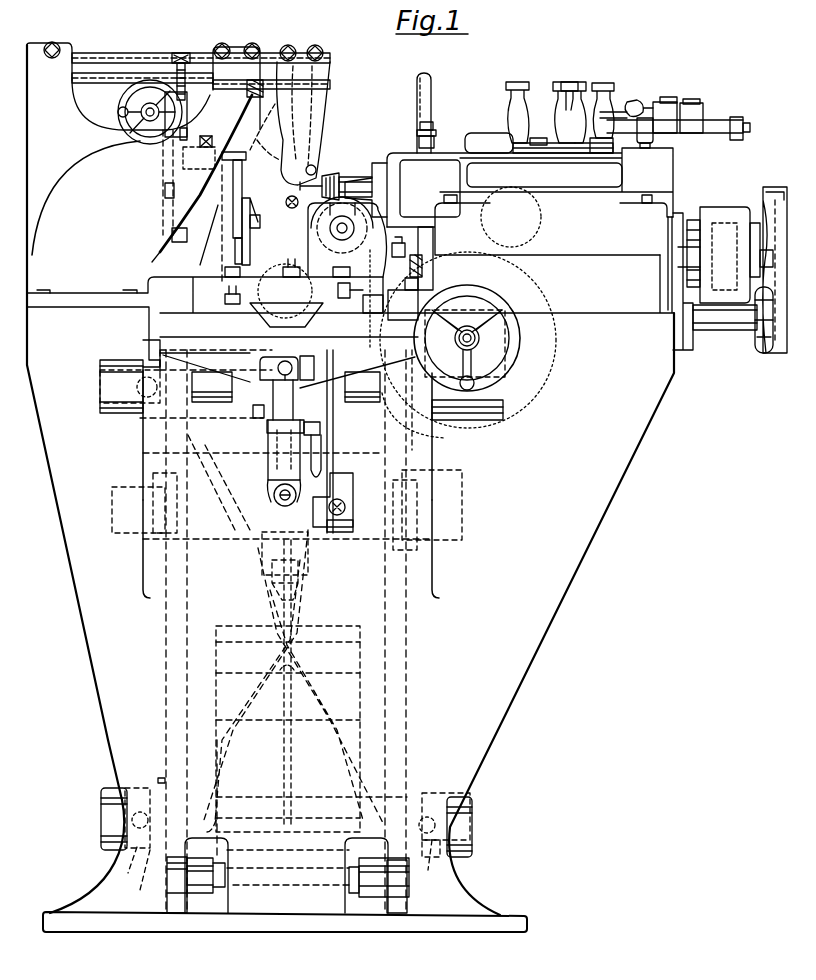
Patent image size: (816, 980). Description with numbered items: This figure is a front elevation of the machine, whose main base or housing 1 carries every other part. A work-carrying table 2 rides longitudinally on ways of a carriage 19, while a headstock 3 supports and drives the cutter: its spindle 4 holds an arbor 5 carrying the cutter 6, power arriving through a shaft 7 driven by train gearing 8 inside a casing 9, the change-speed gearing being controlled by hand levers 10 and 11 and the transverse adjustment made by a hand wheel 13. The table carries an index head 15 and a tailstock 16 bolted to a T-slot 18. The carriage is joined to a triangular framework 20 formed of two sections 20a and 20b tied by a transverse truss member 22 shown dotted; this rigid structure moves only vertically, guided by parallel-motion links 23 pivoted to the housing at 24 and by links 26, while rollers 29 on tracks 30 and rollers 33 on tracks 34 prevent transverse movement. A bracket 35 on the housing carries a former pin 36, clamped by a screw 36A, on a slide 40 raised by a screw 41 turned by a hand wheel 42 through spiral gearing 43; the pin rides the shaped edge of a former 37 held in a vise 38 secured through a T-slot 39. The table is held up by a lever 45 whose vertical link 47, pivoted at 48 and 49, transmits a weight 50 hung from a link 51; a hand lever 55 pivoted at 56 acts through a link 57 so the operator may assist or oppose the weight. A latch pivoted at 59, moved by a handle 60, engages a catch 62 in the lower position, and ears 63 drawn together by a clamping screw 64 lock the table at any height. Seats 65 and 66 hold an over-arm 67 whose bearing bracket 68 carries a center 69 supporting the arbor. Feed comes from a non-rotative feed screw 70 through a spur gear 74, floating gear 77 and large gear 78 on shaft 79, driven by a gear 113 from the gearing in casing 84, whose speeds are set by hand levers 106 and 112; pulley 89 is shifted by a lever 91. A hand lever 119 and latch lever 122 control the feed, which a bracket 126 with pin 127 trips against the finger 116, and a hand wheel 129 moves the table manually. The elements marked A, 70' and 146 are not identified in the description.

The main base or housing 1 is at (500, 690).
The work-carrying table 2 is at (390, 292).
The headstock 3 is at (530, 192).
The spindle 4 is at (378, 175).
The arbor 5 is at (356, 180).
The cutter 6 is at (332, 178).
The shaft 7 is at (682, 250).
The train gearing 8 is at (702, 330).
The box or casing 9 is at (730, 255).
The hand lever 10 is at (556, 108).
The hand lever 11 is at (584, 95).
The hand wheel 13 is at (758, 348).
The index head 15 is at (305, 222).
The tailstock 16 is at (318, 252).
The T-slot 18 is at (360, 301).
The carriage 19 is at (279, 376).
The framework 20 is at (408, 638).
The framework section 20a is at (176, 683).
The framework section 20b is at (395, 706).
The transverse truss member 22 is at (326, 560).
The horizontal link 23 is at (203, 877).
The pivot 24 is at (167, 875).
The horizontal link 26 is at (270, 376).
The roller 29 is at (278, 865).
The track 30 is at (158, 790).
The roller 33 is at (138, 405).
The track 34 is at (163, 417).
The bracket 35 is at (86, 198).
The former pin 36 is at (243, 138).
The screw 36A is at (263, 120).
The former 37 is at (243, 185).
The vise 38 is at (205, 253).
The T-slot 39 is at (225, 298).
The slide 40 is at (218, 208).
The screw 41 is at (163, 170).
The hand wheel 42 is at (145, 140).
The spiral gearing 43 is at (146, 76).
The lever 45 is at (173, 585).
The vertical link 47 is at (280, 450).
The pivot 48 is at (252, 538).
The pivot 49 is at (253, 411).
The weight 50 is at (330, 628).
The link 51 is at (262, 570).
The hand lever 55 is at (353, 525).
The pivot 56 is at (353, 500).
The vertical link 57 is at (322, 452).
The pivot 59 is at (314, 353).
The handle 60 is at (268, 358).
The catch 62 is at (272, 505).
The ear 63 is at (267, 428).
The clamping screw 64 is at (320, 427).
The seat 65 is at (49, 64).
The seat 66 is at (236, 88).
The over-arm 67 is at (100, 82).
The bearing bracket 68 is at (318, 110).
The center 69 is at (286, 203).
The feed screw 70 is at (286, 315).
The gear 70' is at (285, 295).
The spur gear 74 is at (284, 268).
The intermediate gear 77 is at (338, 360).
The large gear 78 is at (548, 277).
The shaft 79 is at (480, 338).
The housing or casing 84 is at (193, 142).
The loose belt pulley 89 is at (772, 187).
The lever 91 is at (640, 104).
The hand lever 106 is at (606, 105).
The hand lever 112 is at (508, 107).
The gear 113 is at (543, 215).
The finger 116 is at (405, 252).
The hand lever 119 is at (417, 93).
The latch lever 122 is at (428, 97).
The bracket 126 is at (433, 290).
The pin 127 is at (433, 255).
The hand wheel 129 is at (508, 352).
The bracket 146 is at (112, 495).
The boss A is at (368, 228).